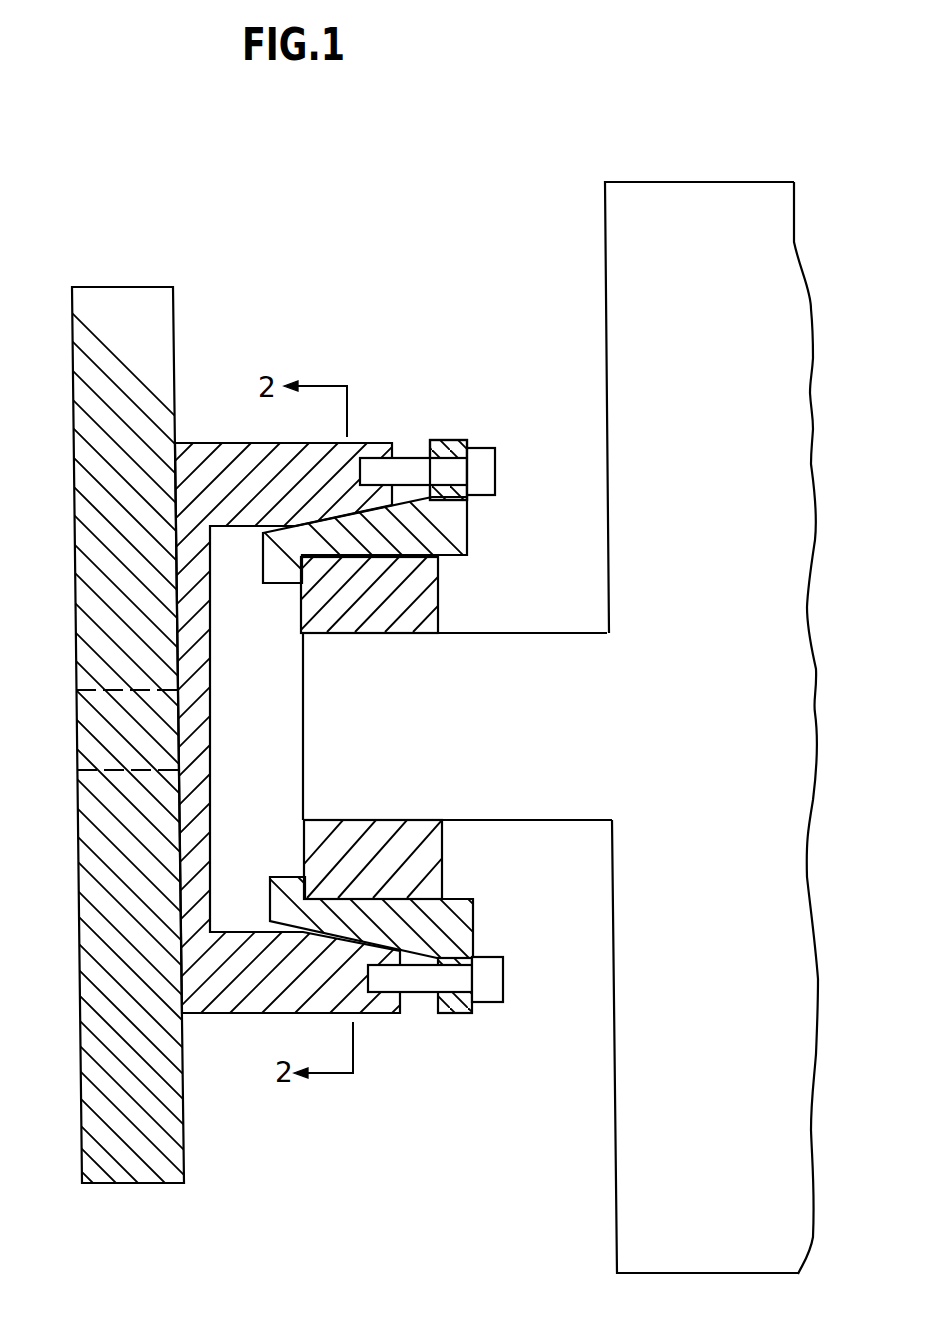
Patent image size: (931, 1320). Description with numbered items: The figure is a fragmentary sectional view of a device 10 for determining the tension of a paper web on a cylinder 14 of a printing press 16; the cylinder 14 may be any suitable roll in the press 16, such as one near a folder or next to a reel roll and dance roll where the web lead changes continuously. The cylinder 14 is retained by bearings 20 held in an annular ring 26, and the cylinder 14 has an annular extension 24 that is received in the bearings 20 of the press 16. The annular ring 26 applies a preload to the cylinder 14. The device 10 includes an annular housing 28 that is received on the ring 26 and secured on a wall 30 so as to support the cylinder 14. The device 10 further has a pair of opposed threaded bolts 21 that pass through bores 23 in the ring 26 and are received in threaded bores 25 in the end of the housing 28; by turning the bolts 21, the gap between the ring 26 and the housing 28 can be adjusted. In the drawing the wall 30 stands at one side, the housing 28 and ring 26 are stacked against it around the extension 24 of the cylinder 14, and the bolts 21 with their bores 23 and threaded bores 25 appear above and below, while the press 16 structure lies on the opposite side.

The device 10 is at (452, 430).
The cylinder 14 is at (630, 182).
The printing press 16 is at (703, 182).
The bearings 20 is at (432, 580).
The threaded bolts 21 is at (497, 485).
The bores 23 is at (462, 445).
The annular extension 24 is at (353, 718).
The threaded bores 25 is at (373, 456).
The annular ring 26 is at (457, 1015).
The annular housing 28 is at (213, 1015).
The wall 30 is at (175, 330).